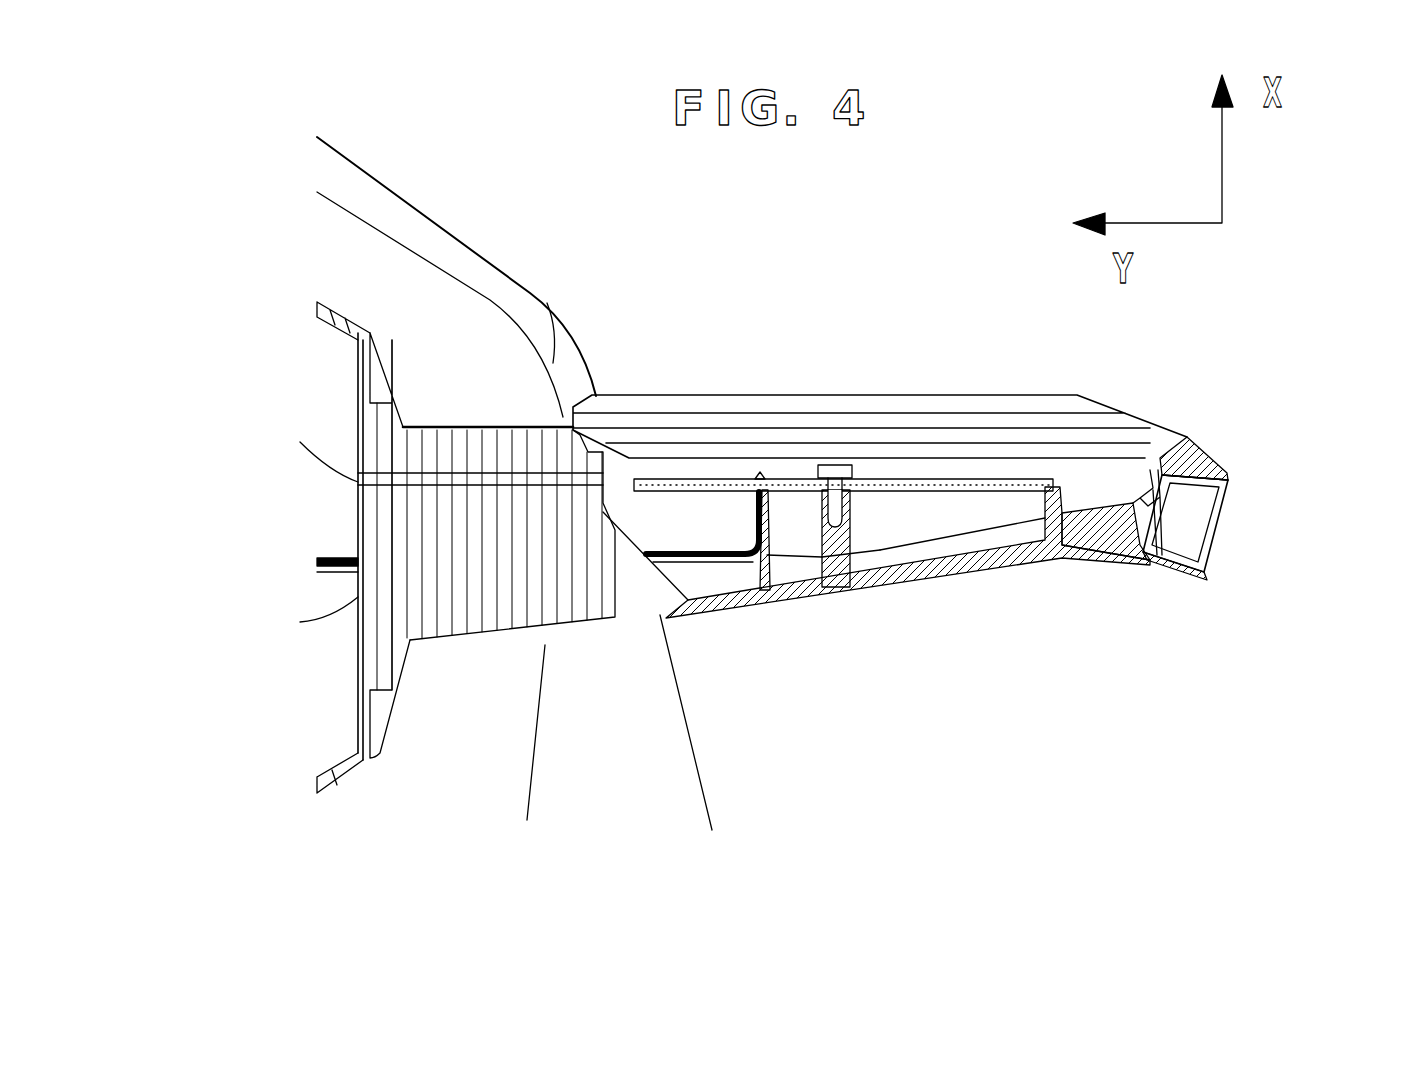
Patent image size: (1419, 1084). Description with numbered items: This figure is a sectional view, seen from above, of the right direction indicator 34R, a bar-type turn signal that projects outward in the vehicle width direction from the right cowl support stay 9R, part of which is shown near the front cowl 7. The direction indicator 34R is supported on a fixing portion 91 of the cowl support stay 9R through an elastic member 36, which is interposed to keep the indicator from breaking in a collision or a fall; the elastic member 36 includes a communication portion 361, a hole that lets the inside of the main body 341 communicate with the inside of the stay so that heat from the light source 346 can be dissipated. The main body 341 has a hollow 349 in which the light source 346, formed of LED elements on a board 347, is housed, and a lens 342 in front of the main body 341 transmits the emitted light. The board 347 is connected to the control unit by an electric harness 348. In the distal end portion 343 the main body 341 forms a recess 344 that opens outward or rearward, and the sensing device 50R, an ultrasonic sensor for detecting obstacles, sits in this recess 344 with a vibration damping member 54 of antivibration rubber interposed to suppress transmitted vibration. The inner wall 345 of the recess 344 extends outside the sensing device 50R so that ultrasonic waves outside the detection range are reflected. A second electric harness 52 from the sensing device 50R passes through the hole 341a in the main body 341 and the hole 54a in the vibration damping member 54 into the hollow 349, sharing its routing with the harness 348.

The direction indicator 34R is at (972, 515).
The main body 341 is at (1033, 553).
The hole 341a is at (1143, 470).
The lens 342 is at (778, 393).
The distal end portion 343 is at (1230, 480).
The recess 344 is at (1157, 570).
The inner wall 345 is at (1205, 572).
The light source 346 is at (968, 455).
The board 347 is at (905, 477).
The electric harness 348 is at (671, 550).
The hollow 349 is at (943, 510).
The elastic member 36 is at (443, 625).
The communication portion 361 is at (358, 478).
The electric harness 52 is at (787, 563).
The vibration damping member 54 is at (1195, 497).
The hole 54a is at (1177, 455).
The sensing device 50R is at (1222, 498).
The front cowl 7 is at (703, 782).
The fixing portion 91 is at (350, 603).
The right wall 9R is at (333, 787).